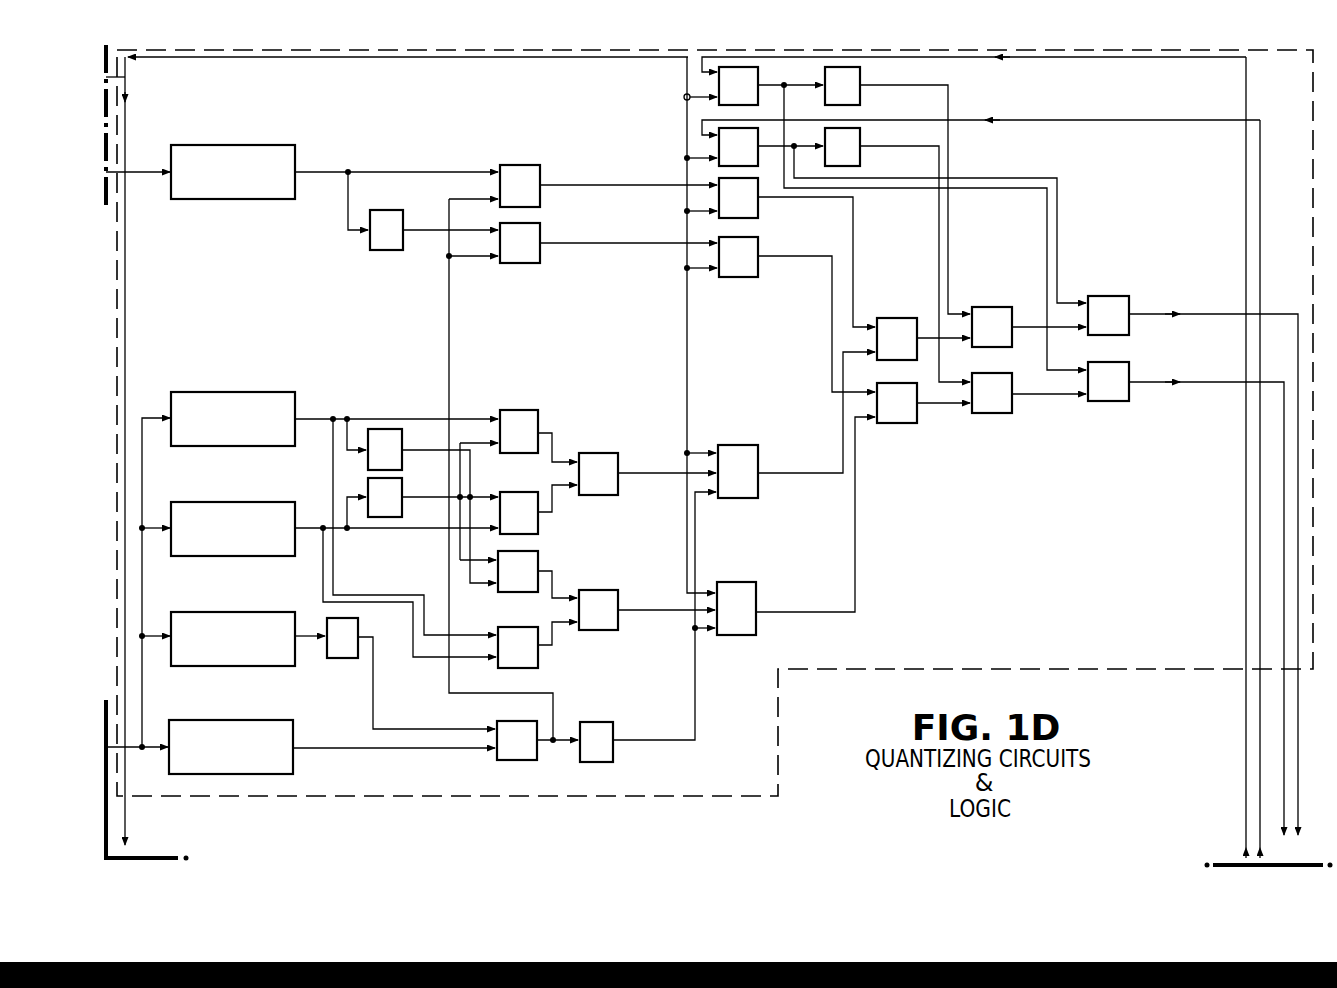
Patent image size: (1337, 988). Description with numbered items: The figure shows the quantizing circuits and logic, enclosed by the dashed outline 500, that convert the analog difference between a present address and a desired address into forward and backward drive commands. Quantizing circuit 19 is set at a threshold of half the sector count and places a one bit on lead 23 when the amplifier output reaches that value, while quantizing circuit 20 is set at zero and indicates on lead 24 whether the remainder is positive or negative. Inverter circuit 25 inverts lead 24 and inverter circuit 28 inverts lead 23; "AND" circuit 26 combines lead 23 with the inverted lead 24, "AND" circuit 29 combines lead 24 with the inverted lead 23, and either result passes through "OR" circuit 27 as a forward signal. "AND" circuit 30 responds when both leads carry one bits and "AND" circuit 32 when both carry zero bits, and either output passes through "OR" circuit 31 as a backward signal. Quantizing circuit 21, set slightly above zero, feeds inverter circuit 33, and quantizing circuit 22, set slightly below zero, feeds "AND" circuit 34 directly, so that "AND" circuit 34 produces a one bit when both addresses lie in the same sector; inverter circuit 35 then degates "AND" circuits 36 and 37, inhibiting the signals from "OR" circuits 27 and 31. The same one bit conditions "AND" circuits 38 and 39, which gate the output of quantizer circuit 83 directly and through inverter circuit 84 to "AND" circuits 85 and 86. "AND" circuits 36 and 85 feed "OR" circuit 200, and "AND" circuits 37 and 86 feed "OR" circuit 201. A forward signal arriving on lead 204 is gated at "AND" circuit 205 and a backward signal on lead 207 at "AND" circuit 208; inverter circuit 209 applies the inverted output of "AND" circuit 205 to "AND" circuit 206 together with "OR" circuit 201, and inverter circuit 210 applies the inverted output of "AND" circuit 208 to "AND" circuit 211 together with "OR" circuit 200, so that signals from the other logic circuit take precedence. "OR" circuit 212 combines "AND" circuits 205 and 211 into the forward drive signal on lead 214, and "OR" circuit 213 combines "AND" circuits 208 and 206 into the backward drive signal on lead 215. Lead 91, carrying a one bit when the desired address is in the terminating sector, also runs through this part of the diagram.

The quantizing circuit 19 is at (262, 392).
The quantizing circuit 20 is at (262, 502).
The quantizing circuit 21 is at (262, 612).
The quantizing circuit 22 is at (258, 720).
The lead 23 is at (333, 418).
The lead 24 is at (322, 527).
The inverter circuit 25 is at (402, 505).
The AND circuit 26 is at (515, 410).
The OR circuit 27 is at (596, 453).
The inverter circuit 28 is at (404, 438).
The AND circuit 29 is at (518, 492).
The AND circuit 30 is at (512, 627).
The OR circuit 31 is at (594, 590).
The AND circuit 32 is at (538, 553).
The inverter circuit 33 is at (359, 630).
The AND circuit 34 is at (518, 760).
The inverter circuit 35 is at (598, 762).
The AND circuit 36 is at (730, 445).
The AND circuit 37 is at (730, 582).
The AND circuit 38 is at (518, 165).
The AND circuit 39 is at (520, 263).
The quantizer circuit 83 is at (270, 145).
The inverter circuit 84 is at (368, 223).
The AND circuit 85 is at (759, 213).
The AND circuit 86 is at (759, 268).
The output lead 91 is at (128, 94).
The OR circuit 200 is at (895, 318).
The OR circuit 201 is at (895, 423).
The lead 204 is at (1064, 123).
The AND circuit 205 is at (717, 146).
The AND circuit 206 is at (995, 413).
The lead 207 is at (1059, 60).
The AND circuit 208 is at (759, 75).
The inverter circuit 209 is at (861, 137).
The inverter circuit 210 is at (861, 74).
The AND circuit 211 is at (1000, 307).
The OR circuit 212 is at (1108, 296).
The OR circuit 213 is at (1105, 401).
The lead 214 is at (1219, 312).
The lead 215 is at (1219, 380).
The quantizing circuits and logic block 500 is at (613, 800).